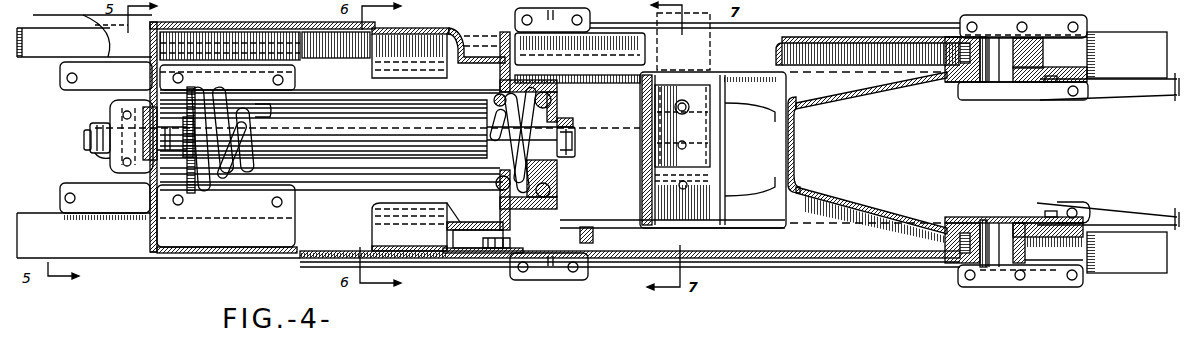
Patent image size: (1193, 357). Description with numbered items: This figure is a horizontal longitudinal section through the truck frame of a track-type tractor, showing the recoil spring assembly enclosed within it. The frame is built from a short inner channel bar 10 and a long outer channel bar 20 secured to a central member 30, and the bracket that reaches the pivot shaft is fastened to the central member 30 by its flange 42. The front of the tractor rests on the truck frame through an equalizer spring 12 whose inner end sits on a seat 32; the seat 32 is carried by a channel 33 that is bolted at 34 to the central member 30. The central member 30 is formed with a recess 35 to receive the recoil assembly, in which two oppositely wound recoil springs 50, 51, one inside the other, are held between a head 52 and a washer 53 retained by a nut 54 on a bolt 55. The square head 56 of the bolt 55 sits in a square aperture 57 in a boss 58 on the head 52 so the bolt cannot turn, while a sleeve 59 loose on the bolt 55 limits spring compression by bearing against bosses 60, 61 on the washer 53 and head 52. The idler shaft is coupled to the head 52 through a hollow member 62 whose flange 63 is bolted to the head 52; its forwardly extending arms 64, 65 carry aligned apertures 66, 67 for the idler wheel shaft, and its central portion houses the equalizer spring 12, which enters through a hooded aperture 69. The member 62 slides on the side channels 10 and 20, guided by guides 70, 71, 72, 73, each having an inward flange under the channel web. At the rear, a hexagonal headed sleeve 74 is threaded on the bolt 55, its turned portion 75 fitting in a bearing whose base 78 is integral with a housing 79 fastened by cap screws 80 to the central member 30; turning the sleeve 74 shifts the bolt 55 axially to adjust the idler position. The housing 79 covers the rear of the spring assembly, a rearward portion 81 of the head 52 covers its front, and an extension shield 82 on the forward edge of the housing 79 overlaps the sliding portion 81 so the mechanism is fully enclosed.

The inner channel bar 10 is at (459, 26).
The equalizer spring 12 is at (708, 40).
The outer channel bar 20 is at (25, 220).
The central member 30 is at (750, 297).
The seat 32 is at (697, 95).
The channel 33 is at (727, 122).
The bolts 34 is at (688, 183).
The recess 35 is at (409, 183).
The flange 42 is at (50, 33).
The recoil spring 50 is at (211, 160).
The recoil spring 51 is at (240, 160).
The head 52 is at (602, 86).
The washer 53 is at (187, 210).
The nut 54 is at (118, 108).
The bolt 55 is at (87, 128).
The square head 56 is at (575, 147).
The square aperture 57 is at (574, 168).
The boss 58 is at (565, 172).
The sleeve 59 is at (348, 143).
The boss 60 is at (261, 153).
The boss 61 is at (503, 160).
The member 62 is at (870, 262).
The flange 63 is at (514, 20).
The arm 64 is at (903, 82).
The arm 65 is at (895, 217).
The aperture 66 is at (1003, 75).
The aperture 67 is at (1003, 233).
The hooded aperture 69 is at (777, 37).
The guide 70 is at (572, 280).
The guide 71 is at (1010, 287).
The guide 72 is at (590, 21).
The guide 73 is at (1114, 28).
The headed sleeve 74 is at (88, 133).
The turned portion 75 is at (108, 152).
The base 78 is at (106, 137).
The housing 79 is at (157, 253).
The cap screws 80 is at (272, 81).
The housing portion 81 is at (452, 252).
The extension shield 82 is at (322, 256).